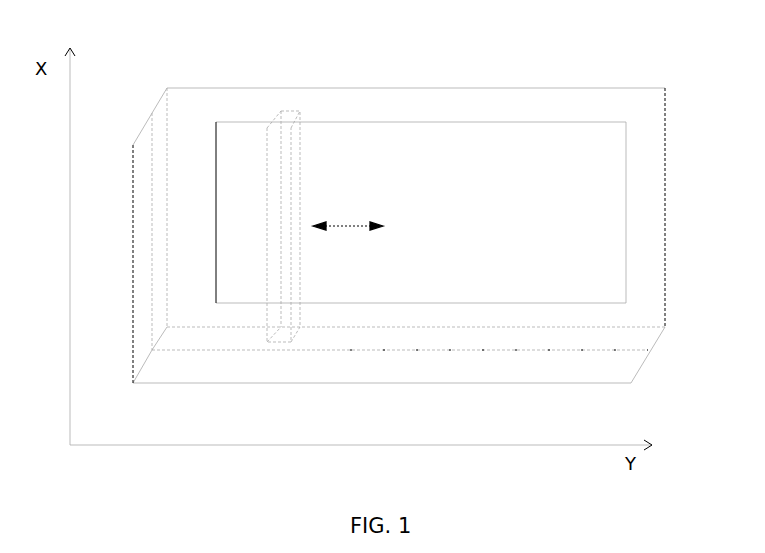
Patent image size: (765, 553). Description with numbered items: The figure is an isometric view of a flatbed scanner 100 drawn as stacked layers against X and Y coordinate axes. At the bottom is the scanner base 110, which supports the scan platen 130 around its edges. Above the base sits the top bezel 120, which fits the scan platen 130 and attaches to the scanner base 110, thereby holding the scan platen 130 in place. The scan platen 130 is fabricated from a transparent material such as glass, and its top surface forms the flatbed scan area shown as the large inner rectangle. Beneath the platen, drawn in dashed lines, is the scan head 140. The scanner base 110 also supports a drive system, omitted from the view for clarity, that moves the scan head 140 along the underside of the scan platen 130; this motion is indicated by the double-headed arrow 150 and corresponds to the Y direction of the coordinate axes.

The flatbed scanner 100 is at (657, 44).
The scanner base 110 is at (640, 377).
The top bezel 120 is at (658, 337).
The scan platen 130 is at (626, 184).
The scan head 140 is at (290, 110).
The arrow 150 is at (369, 227).